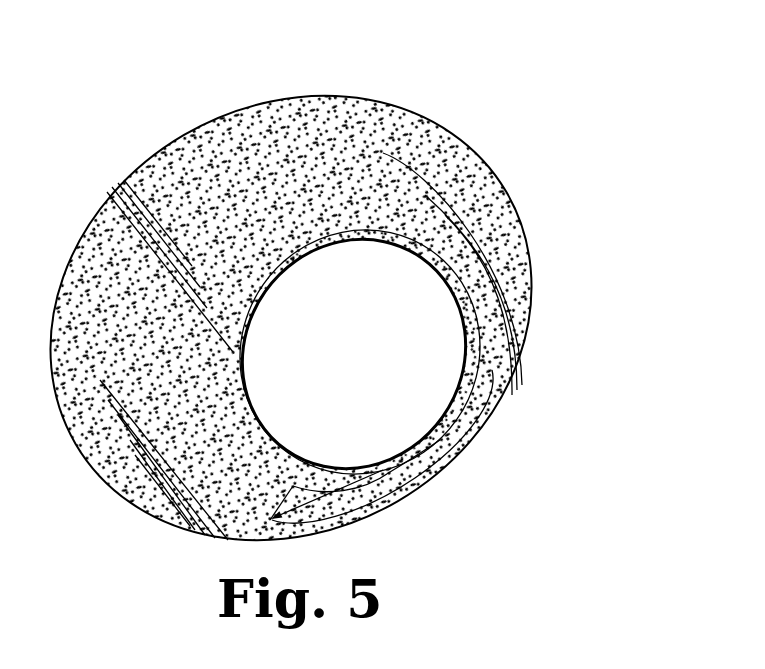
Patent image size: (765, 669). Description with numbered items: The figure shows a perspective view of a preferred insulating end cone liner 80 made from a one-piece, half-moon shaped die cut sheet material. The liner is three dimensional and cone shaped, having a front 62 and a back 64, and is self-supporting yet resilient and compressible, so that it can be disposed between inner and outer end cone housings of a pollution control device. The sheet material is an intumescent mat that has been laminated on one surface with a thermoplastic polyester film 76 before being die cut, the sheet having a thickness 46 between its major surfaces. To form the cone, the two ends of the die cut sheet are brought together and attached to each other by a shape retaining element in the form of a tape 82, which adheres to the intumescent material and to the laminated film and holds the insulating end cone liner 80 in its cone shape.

The front 62 is at (267, 106).
The insulating end cone liner 80 is at (528, 213).
The thermoplastic polyester film 76 is at (520, 281).
The back 64 is at (500, 387).
The thickness 46 is at (467, 445).
The tape 82 is at (380, 466).